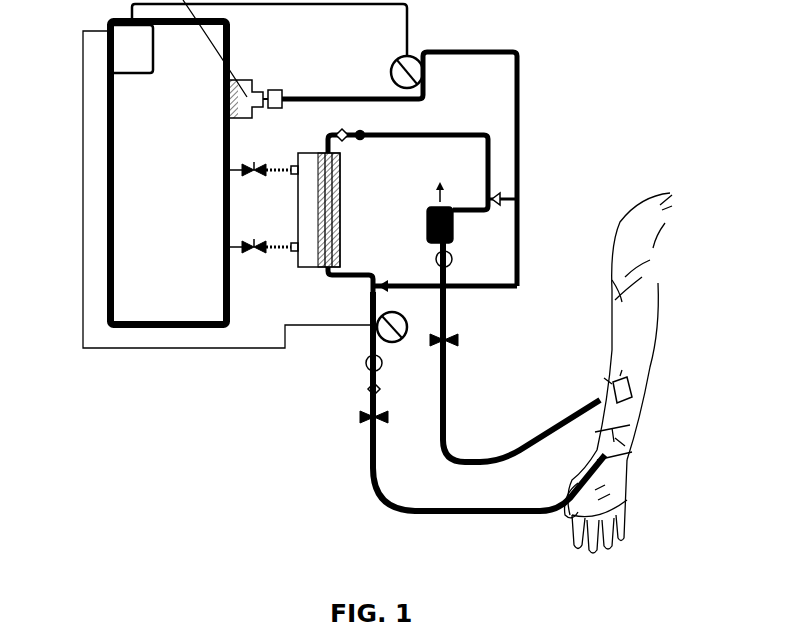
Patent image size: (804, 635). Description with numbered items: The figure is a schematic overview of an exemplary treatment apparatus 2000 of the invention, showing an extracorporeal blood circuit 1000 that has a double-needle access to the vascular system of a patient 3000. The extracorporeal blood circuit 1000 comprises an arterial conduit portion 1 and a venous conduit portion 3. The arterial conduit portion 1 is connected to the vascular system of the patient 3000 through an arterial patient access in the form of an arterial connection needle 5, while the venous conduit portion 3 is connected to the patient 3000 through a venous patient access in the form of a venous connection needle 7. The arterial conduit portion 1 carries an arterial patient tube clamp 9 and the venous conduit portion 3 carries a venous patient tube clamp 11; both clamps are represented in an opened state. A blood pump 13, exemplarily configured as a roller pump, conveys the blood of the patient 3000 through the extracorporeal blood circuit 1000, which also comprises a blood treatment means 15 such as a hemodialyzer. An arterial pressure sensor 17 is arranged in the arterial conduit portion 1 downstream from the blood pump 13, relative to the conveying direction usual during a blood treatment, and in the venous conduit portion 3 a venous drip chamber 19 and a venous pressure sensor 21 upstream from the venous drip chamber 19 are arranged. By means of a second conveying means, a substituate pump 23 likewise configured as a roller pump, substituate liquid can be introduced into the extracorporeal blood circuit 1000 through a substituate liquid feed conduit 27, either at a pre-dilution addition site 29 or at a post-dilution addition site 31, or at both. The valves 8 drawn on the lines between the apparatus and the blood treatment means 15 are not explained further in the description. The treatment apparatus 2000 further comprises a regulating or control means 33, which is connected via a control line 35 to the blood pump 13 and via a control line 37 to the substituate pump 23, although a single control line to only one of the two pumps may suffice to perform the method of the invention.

The arterial conduit portion 1 is at (510, 523).
The venous conduit portion 3 is at (473, 460).
The arterial connection needle 5 is at (632, 437).
The venous connection needle 7 is at (650, 373).
The valves 8 is at (264, 202).
The arterial patient tube clamp 9 is at (365, 427).
The venous patient tube clamp 11 is at (453, 346).
The blood pump 13 is at (378, 322).
The blood treatment means 15 is at (342, 178).
The arterial pressure sensor 17 is at (364, 364).
The venous drip chamber 19 is at (455, 225).
The venous pressure sensor 21 is at (453, 265).
The substituate pump 23 is at (414, 57).
The substituate liquid feed conduit 27 is at (334, 97).
The pre-dilution addition site 29 is at (382, 278).
The post-dilution addition site 31 is at (517, 200).
The control means 33 is at (120, 50).
The control line 35 is at (227, 350).
The control line 37 is at (243, 8).
The extracorporeal blood circuit 1000 is at (436, 173).
The treatment apparatus 2000 is at (207, 215).
The patient 3000 is at (648, 233).